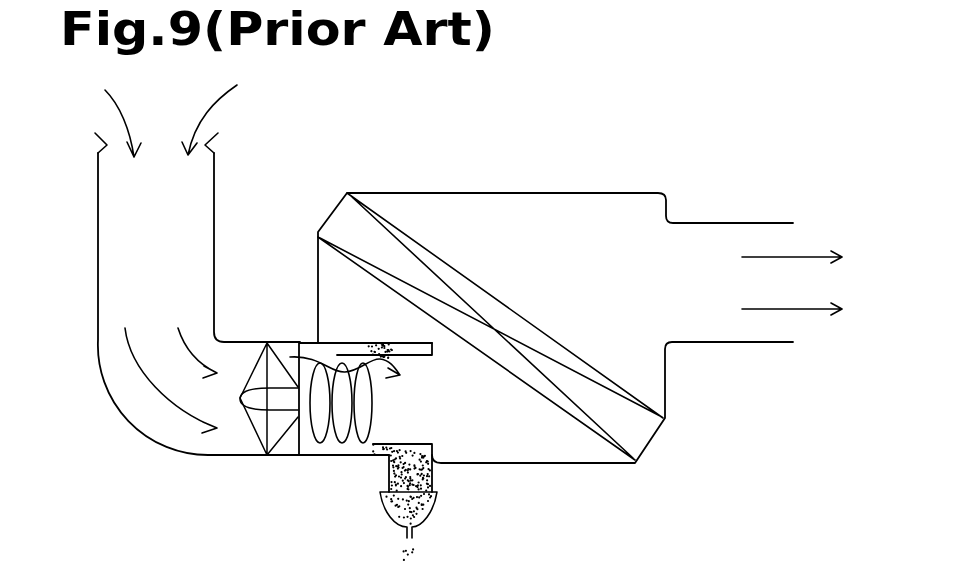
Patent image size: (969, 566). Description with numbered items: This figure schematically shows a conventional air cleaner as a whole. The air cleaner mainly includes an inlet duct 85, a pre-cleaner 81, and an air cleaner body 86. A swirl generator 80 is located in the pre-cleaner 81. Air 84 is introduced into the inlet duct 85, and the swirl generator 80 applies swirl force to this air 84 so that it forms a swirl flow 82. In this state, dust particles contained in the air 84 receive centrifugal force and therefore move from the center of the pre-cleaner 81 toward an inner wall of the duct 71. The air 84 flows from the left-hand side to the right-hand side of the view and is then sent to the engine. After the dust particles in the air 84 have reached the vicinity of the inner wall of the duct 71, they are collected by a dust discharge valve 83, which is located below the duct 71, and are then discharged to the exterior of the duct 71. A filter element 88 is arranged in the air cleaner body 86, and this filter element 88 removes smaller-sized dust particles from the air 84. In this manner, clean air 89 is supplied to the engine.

The duct 71 is at (350, 458).
The swirl generator 80 is at (260, 420).
The pre-cleaner 81 is at (313, 460).
The swirl flow 82 is at (340, 360).
The dust discharge valve 83 is at (417, 478).
The air 84 is at (215, 97).
The inlet duct 85 is at (98, 280).
The air cleaner body 86 is at (448, 190).
The filter element 88 is at (507, 301).
The clean air 89 is at (812, 255).